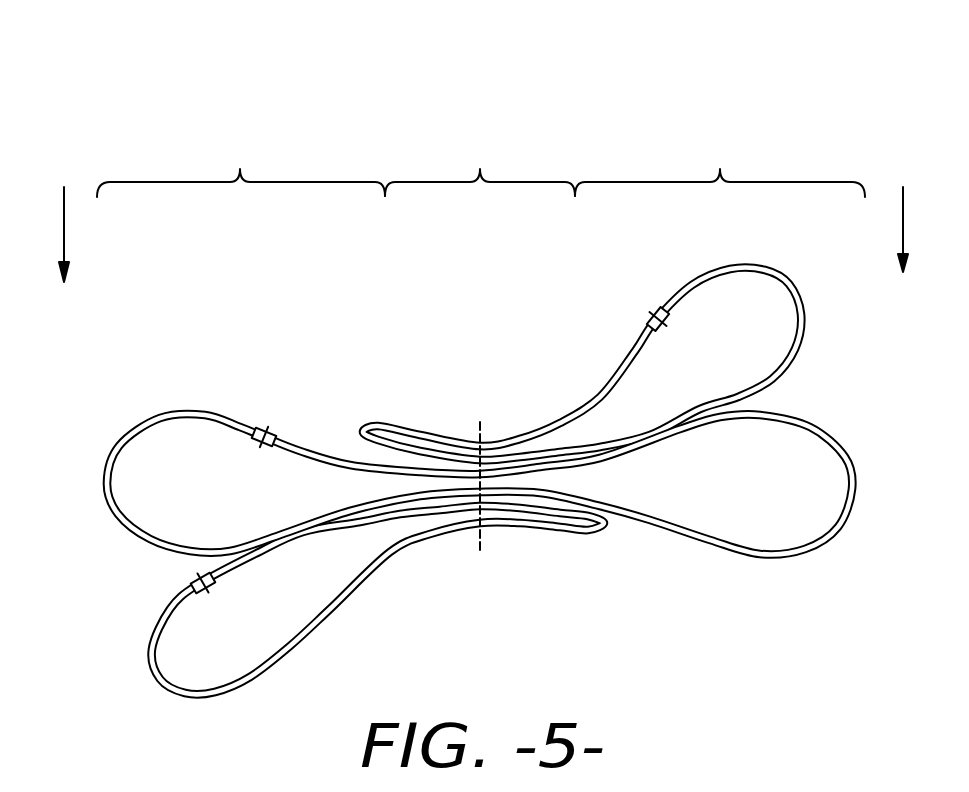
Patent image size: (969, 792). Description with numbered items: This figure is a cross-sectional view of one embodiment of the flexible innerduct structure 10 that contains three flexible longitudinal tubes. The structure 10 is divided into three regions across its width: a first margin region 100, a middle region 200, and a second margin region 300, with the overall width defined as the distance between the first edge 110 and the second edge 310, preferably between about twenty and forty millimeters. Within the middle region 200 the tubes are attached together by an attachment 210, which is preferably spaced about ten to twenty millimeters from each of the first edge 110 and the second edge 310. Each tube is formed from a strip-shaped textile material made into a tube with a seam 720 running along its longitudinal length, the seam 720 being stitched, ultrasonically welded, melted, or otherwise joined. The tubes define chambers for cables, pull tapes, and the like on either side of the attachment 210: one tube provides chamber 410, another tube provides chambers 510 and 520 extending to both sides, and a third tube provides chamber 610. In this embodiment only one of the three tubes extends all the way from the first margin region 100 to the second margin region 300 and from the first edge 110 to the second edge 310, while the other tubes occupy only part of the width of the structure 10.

The innerduct structure 10 is at (471, 357).
The first margin region 100 is at (241, 165).
The middle region 200 is at (480, 165).
The second margin region 300 is at (720, 165).
The first edge 110 is at (65, 216).
The second edge 310 is at (906, 211).
The attachment 210 is at (478, 540).
The chamber 410 is at (752, 347).
The chamber 510 is at (215, 502).
The chamber 520 is at (785, 499).
The chamber 610 is at (259, 646).
The seam 720 is at (258, 425).